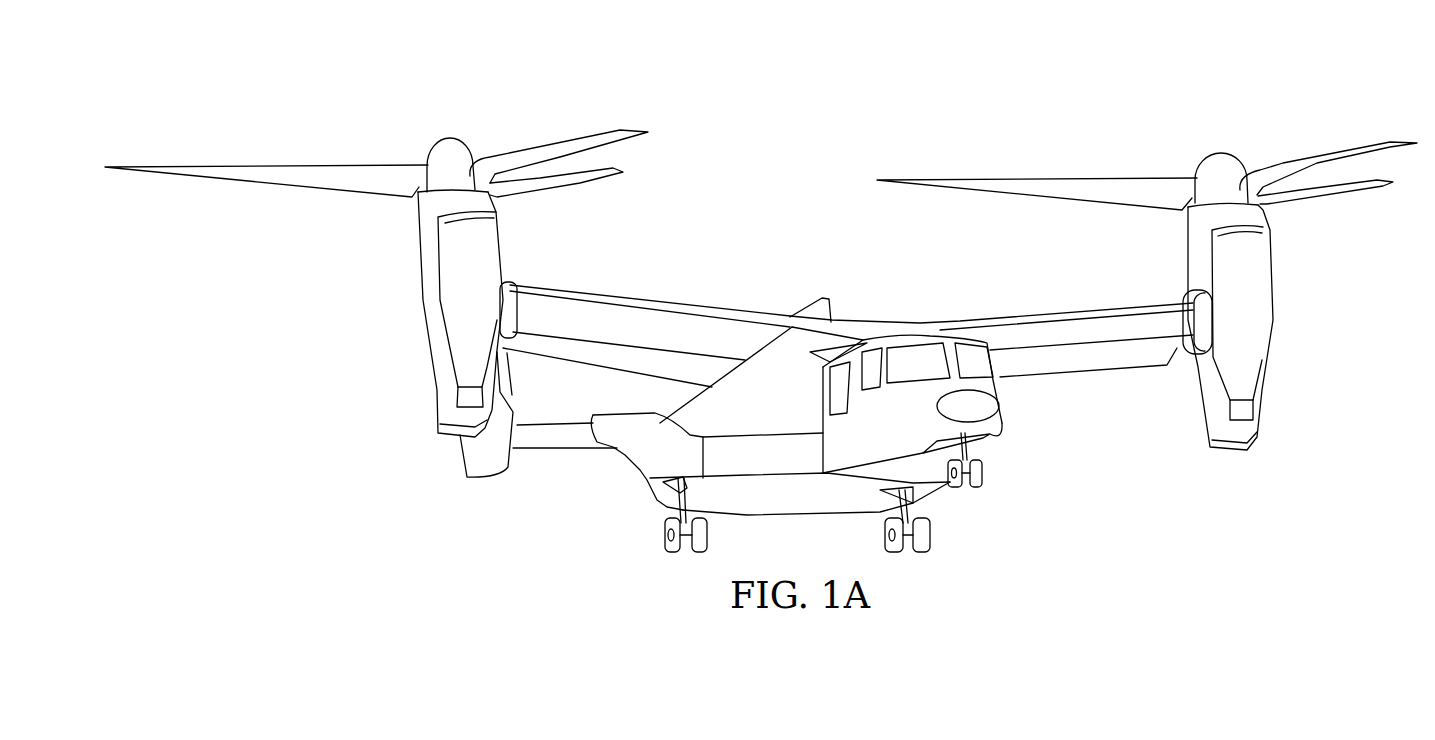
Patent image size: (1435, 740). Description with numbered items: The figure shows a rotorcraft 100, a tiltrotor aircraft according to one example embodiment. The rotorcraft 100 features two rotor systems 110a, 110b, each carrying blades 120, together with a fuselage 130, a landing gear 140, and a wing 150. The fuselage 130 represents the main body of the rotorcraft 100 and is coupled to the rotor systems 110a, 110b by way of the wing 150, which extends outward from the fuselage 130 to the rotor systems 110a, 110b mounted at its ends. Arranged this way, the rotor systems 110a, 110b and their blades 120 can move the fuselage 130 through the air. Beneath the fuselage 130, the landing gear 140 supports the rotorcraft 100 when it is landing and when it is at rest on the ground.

The rotorcraft 100 is at (856, 100).
The rotor system 110a is at (404, 380).
The rotor system 110b is at (1286, 407).
The blades 120 is at (274, 166).
The fuselage 130 is at (1005, 420).
The landing gear 140 is at (665, 548).
The wing 150 is at (651, 302).